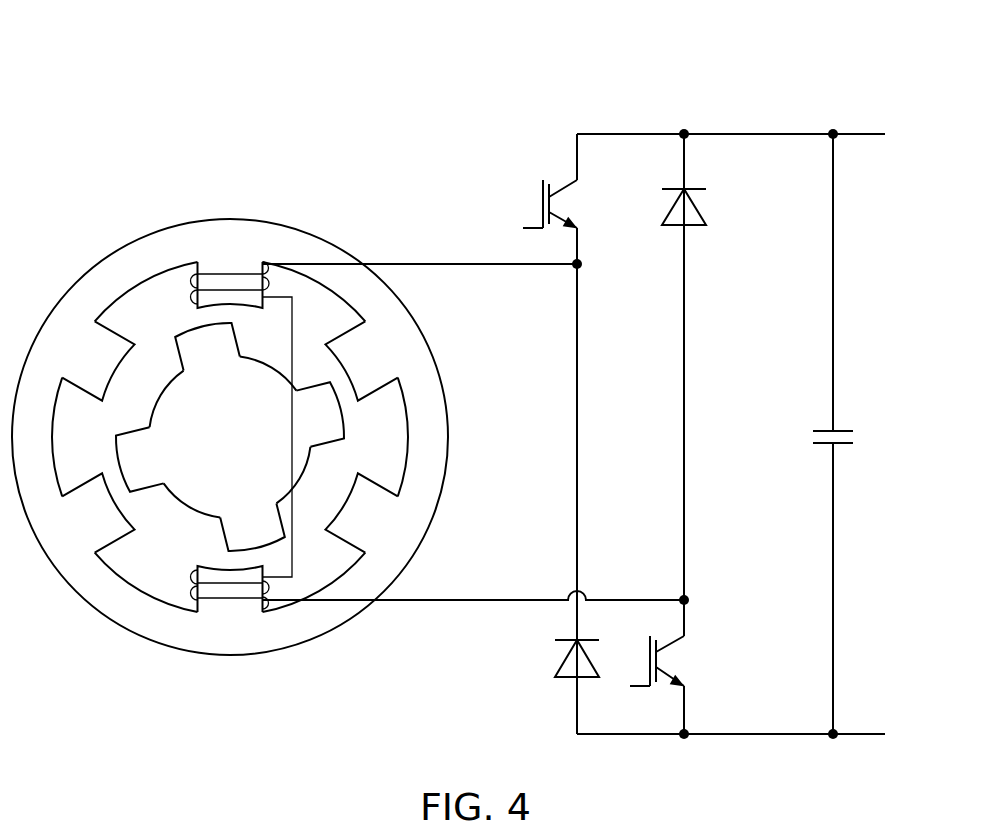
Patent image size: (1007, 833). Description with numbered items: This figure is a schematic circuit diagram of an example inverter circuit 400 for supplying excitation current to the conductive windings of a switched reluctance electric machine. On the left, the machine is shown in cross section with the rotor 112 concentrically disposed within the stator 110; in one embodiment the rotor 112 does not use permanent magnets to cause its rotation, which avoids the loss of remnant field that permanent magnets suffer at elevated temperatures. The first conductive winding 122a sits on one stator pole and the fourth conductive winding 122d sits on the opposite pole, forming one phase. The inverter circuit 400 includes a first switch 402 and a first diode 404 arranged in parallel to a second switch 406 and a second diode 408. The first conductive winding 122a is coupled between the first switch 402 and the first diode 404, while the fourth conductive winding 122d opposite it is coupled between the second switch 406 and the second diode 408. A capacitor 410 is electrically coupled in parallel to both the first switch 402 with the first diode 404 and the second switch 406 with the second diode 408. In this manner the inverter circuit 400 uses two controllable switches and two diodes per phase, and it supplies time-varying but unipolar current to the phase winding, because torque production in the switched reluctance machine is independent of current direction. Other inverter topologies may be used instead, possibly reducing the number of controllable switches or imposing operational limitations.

The inverter circuit 400 is at (579, 377).
The first switch 402 is at (540, 190).
The first diode 404 is at (563, 657).
The second switch 406 is at (660, 655).
The second diode 408 is at (697, 227).
The capacitor 410 is at (843, 425).
The stator 110 is at (307, 250).
The rotor 112 is at (178, 393).
The first conductive winding 122a is at (245, 273).
The fourth conductive winding 122d is at (213, 583).